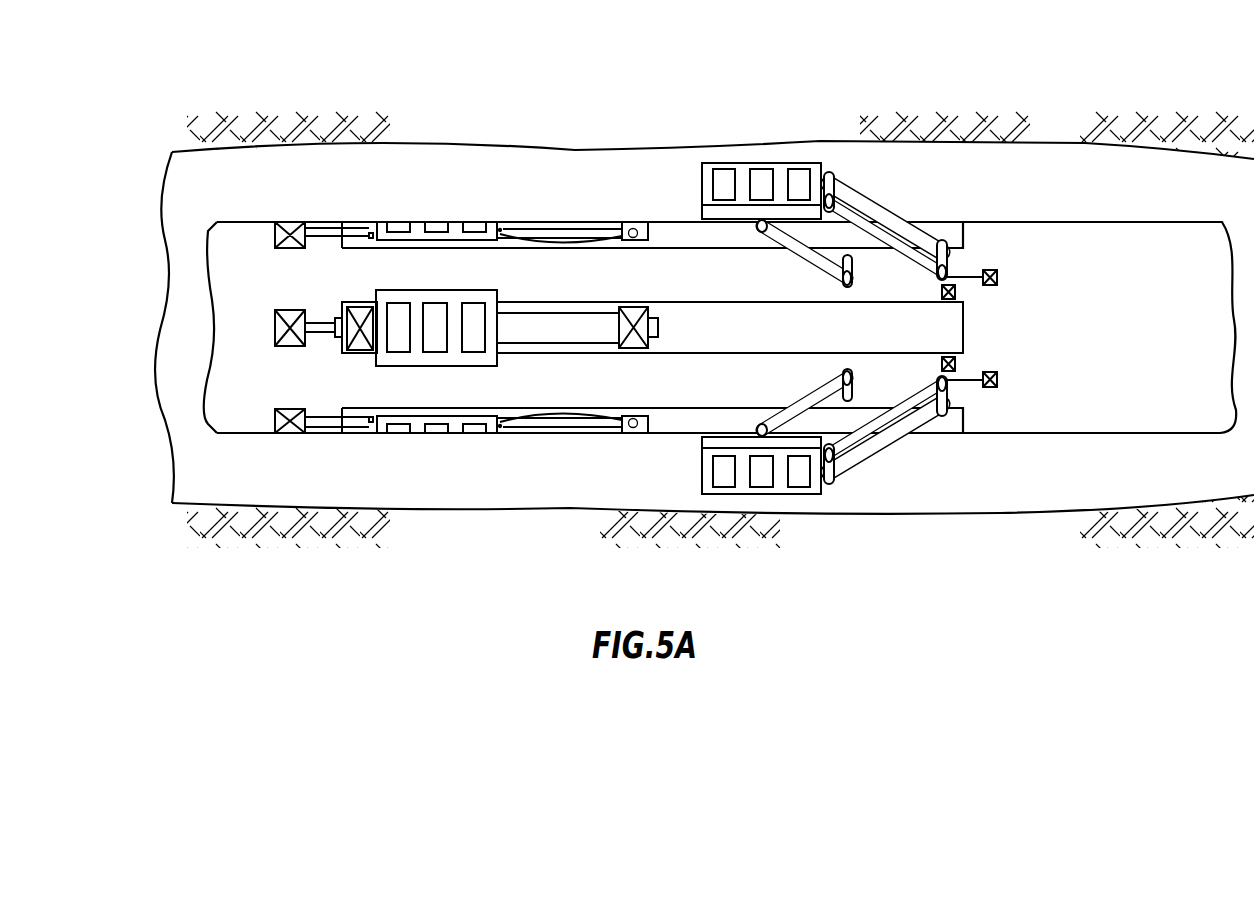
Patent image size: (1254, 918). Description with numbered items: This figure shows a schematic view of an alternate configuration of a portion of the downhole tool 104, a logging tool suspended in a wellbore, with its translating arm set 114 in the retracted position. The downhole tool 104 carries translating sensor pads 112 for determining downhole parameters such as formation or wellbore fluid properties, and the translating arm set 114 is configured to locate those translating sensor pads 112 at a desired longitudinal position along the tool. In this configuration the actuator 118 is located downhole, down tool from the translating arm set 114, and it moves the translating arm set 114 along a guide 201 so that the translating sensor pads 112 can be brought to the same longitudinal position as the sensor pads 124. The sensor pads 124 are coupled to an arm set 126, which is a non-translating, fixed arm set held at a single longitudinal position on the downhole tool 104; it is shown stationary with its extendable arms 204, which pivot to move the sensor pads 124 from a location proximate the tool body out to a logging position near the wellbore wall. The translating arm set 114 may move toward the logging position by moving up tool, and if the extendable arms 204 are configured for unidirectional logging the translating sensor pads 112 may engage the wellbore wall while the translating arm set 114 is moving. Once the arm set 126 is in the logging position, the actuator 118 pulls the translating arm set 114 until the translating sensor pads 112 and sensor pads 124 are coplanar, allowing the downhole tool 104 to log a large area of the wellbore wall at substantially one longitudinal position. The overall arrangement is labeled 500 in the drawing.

The downhole tool 104 is at (1083, 190).
The arm set 126 is at (884, 170).
The actuator 118 is at (275, 420).
The translating arm set 114 is at (470, 283).
The translating sensor pad 112 is at (417, 222).
The guide 201 is at (717, 238).
The sensor pad 124 is at (702, 187).
The extendable arm 204 is at (538, 222).
The tool system 500 is at (323, 438).